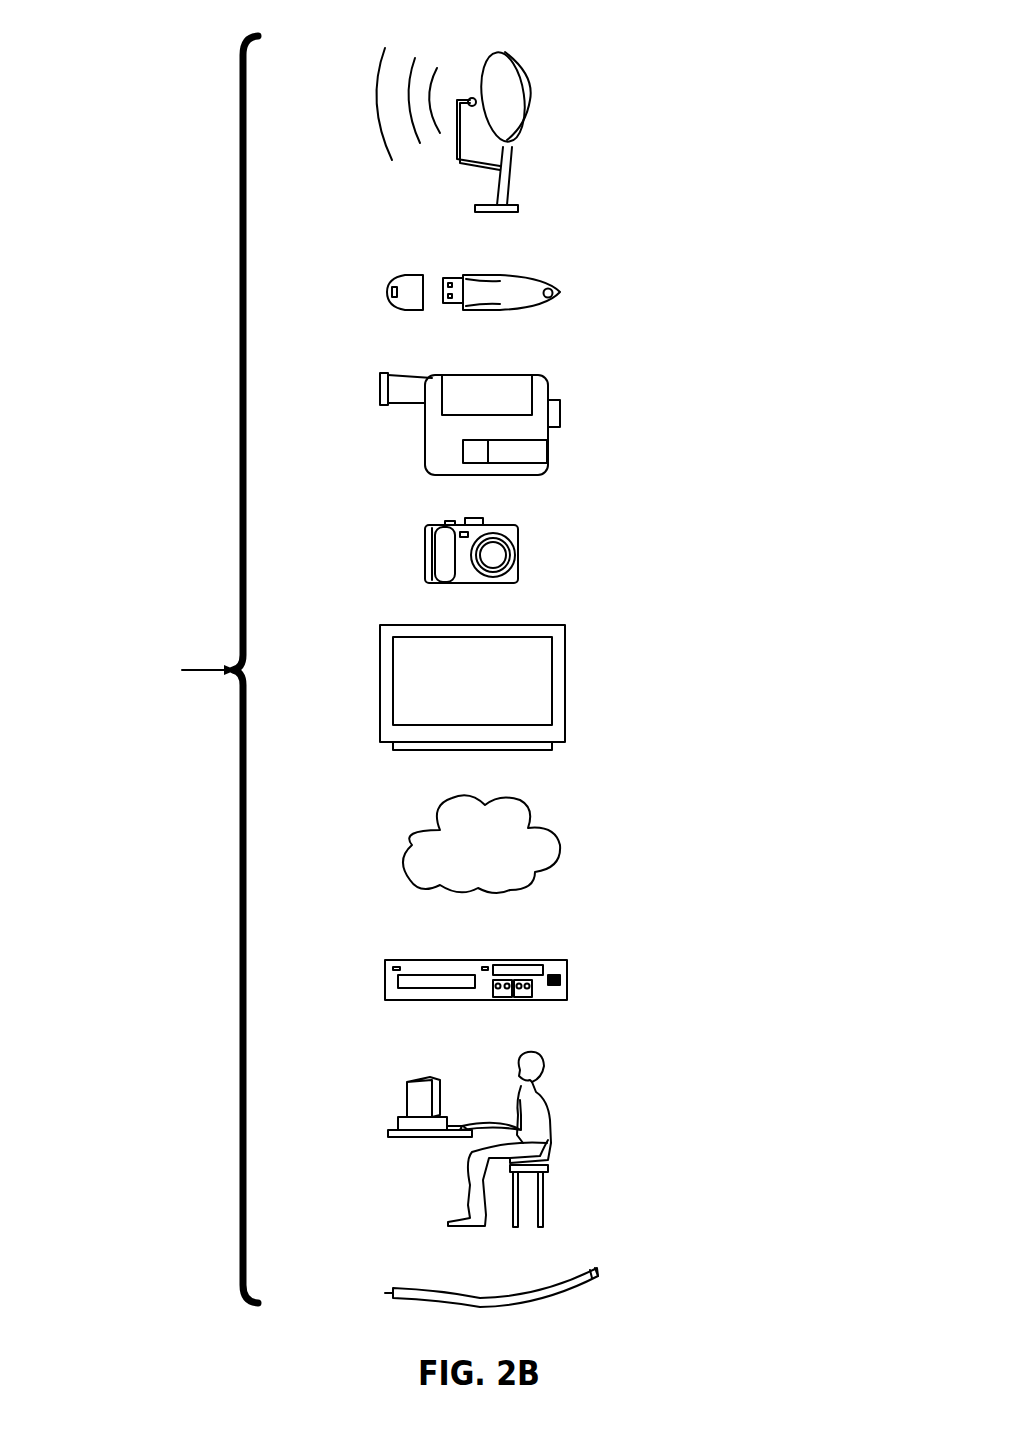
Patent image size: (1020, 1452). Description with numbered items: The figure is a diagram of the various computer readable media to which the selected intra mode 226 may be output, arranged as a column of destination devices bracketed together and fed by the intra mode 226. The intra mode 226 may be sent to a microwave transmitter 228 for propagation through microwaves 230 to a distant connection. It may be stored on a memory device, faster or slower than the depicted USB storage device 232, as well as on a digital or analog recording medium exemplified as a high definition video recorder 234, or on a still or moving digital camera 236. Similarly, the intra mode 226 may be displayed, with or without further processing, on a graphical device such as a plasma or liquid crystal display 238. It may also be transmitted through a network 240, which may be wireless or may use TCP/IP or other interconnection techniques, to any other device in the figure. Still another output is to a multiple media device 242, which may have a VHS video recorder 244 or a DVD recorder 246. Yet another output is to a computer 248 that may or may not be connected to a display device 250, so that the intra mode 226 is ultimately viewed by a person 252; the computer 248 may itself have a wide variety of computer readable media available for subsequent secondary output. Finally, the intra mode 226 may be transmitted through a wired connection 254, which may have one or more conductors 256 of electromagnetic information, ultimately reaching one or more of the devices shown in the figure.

The intra mode 226 is at (117, 660).
The microwave transmitter 228 is at (523, 115).
The microwaves 230 is at (383, 146).
The USB storage device 232 is at (542, 280).
The high definition video recorder 234 is at (550, 392).
The digital camera 236 is at (518, 537).
The plasma or liquid crystal display 238 is at (565, 688).
The network 240 is at (548, 830).
The multiple media device 242 is at (499, 966).
The VHS video recorder 244 is at (410, 988).
The DVD recorder 246 is at (532, 960).
The computer 248 is at (417, 1080).
The display device 250 is at (437, 1077).
The person 252 is at (548, 1102).
The wired connection 254 is at (528, 1271).
The conductors 256 is at (600, 1273).